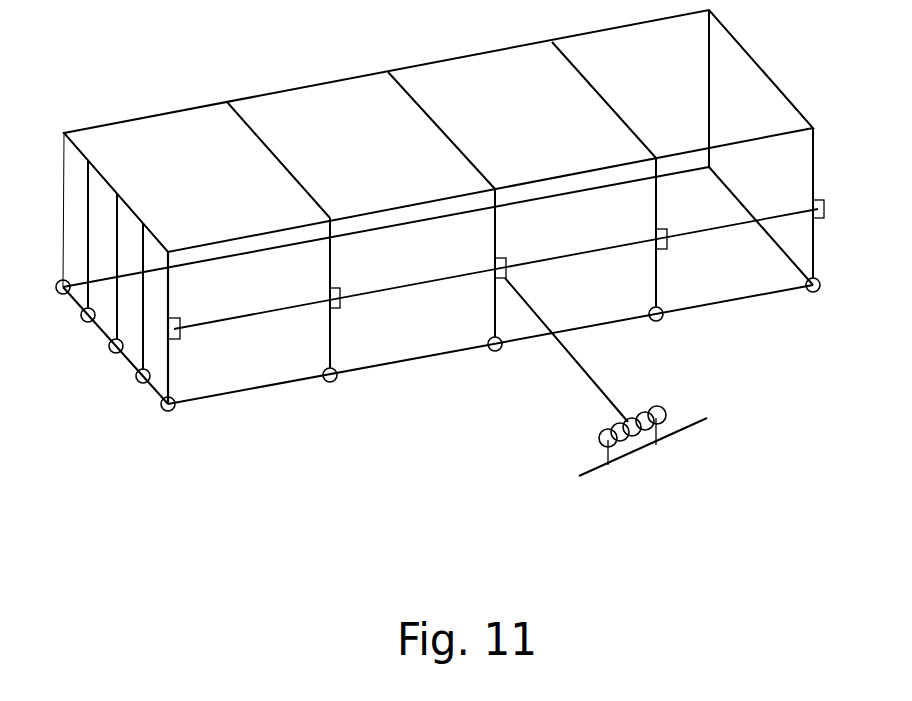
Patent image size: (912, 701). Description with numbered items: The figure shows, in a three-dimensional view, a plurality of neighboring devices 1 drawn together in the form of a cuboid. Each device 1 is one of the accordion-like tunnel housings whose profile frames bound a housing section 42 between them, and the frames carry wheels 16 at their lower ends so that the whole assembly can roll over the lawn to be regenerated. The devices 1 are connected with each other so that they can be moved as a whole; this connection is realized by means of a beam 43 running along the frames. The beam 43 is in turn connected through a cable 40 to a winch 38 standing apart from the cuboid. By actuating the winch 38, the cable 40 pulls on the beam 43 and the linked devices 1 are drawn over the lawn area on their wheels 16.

The device 1 is at (200, 180).
The wheels 16 is at (819, 291).
The winch 38 is at (667, 412).
The cable 40 is at (568, 355).
The housing section 42 is at (73, 299).
The beam 43 is at (190, 327).